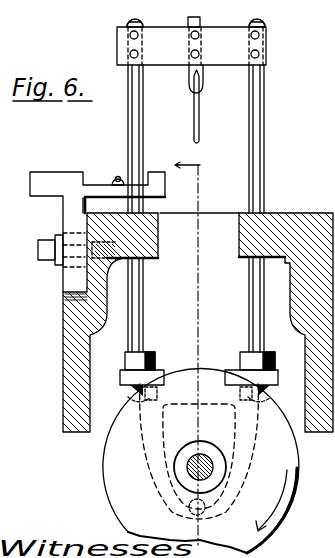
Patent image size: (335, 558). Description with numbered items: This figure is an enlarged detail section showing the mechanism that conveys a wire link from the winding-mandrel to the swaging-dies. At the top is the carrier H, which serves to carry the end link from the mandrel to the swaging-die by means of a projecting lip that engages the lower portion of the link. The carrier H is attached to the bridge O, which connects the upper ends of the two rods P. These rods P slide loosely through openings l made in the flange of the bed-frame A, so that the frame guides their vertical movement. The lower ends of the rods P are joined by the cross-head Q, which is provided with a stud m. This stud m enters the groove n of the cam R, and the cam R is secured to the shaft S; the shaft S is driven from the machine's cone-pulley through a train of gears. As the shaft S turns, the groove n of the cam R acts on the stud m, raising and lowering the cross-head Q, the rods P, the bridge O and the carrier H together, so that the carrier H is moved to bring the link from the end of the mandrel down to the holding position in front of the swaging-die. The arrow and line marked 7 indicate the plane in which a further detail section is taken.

The rods P is at (131, 23).
The bridge O is at (191, 46).
The carrier H is at (199, 110).
The section line 7 7 is at (195, 167).
The openings l is at (260, 208).
The bed-frame A is at (312, 226).
The cross-head Q is at (160, 376).
The shaft S is at (203, 452).
The groove n is at (142, 461).
The stud m is at (184, 506).
The cam R is at (293, 476).